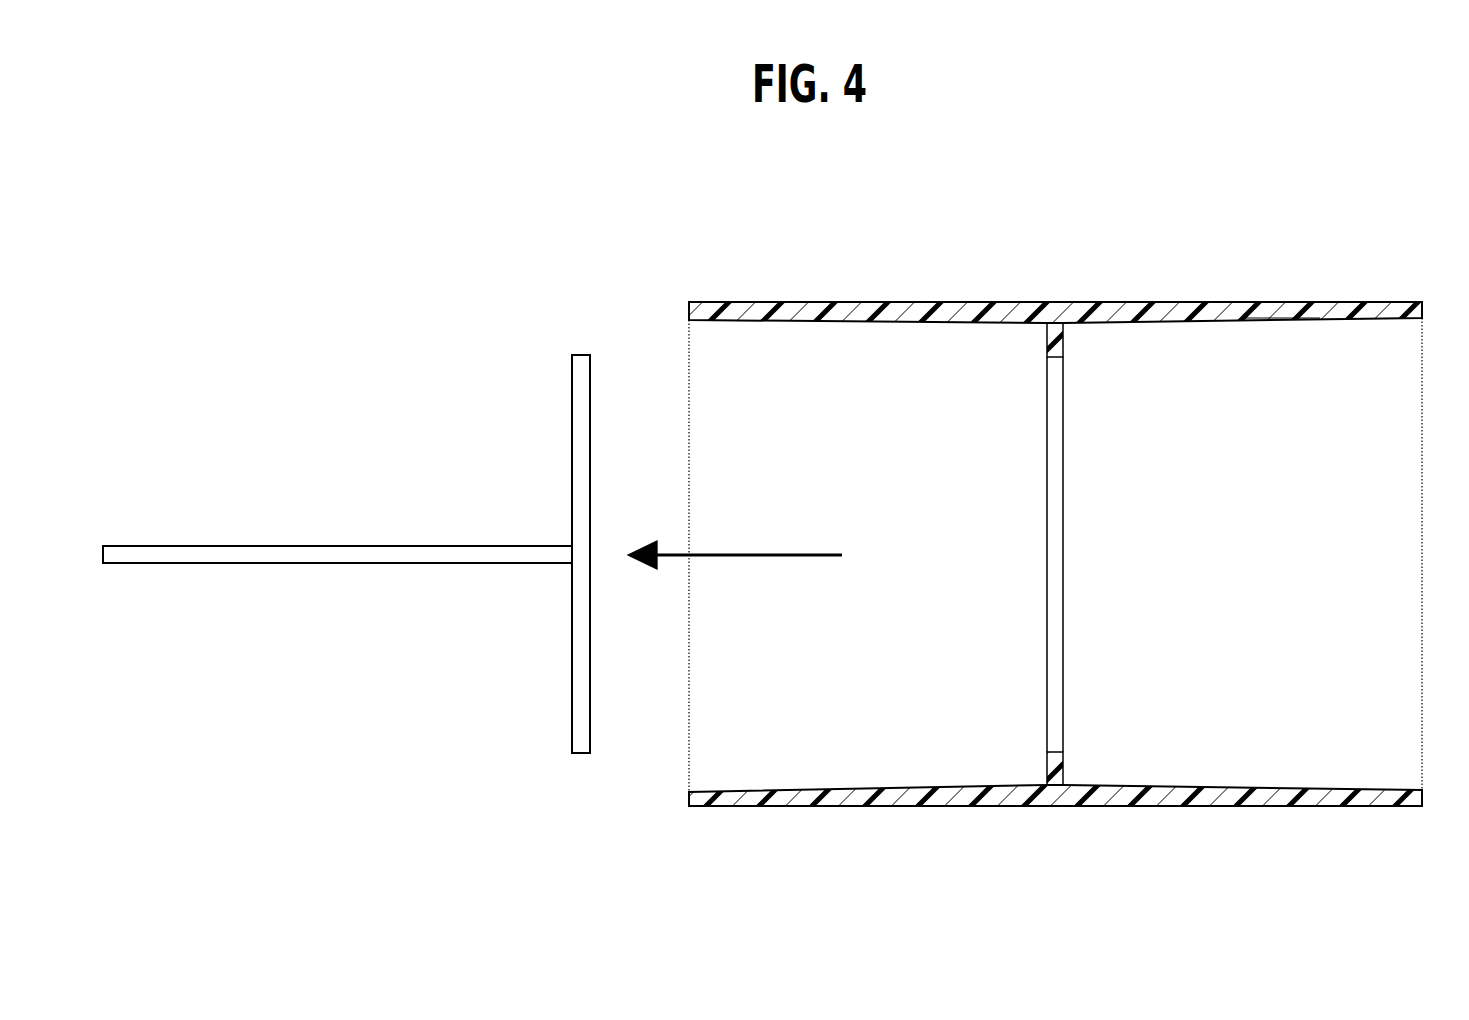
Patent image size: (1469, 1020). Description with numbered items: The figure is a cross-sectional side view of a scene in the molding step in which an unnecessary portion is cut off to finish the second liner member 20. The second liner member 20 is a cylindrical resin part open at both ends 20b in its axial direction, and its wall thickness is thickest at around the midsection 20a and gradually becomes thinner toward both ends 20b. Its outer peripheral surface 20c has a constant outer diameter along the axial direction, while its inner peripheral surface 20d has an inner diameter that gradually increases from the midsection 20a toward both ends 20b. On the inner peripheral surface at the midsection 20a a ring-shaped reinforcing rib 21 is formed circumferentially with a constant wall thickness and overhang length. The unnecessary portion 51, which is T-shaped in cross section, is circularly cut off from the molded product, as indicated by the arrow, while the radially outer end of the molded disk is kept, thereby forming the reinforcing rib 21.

The second liner member 20 is at (935, 302).
The midsection 20a is at (1062, 302).
The ends 20b is at (689, 310).
The outer peripheral surface 20c is at (1175, 302).
The inner peripheral surface 20d is at (1294, 323).
The reinforcing rib 21 is at (1063, 338).
The unnecessary portion 51 is at (338, 563).